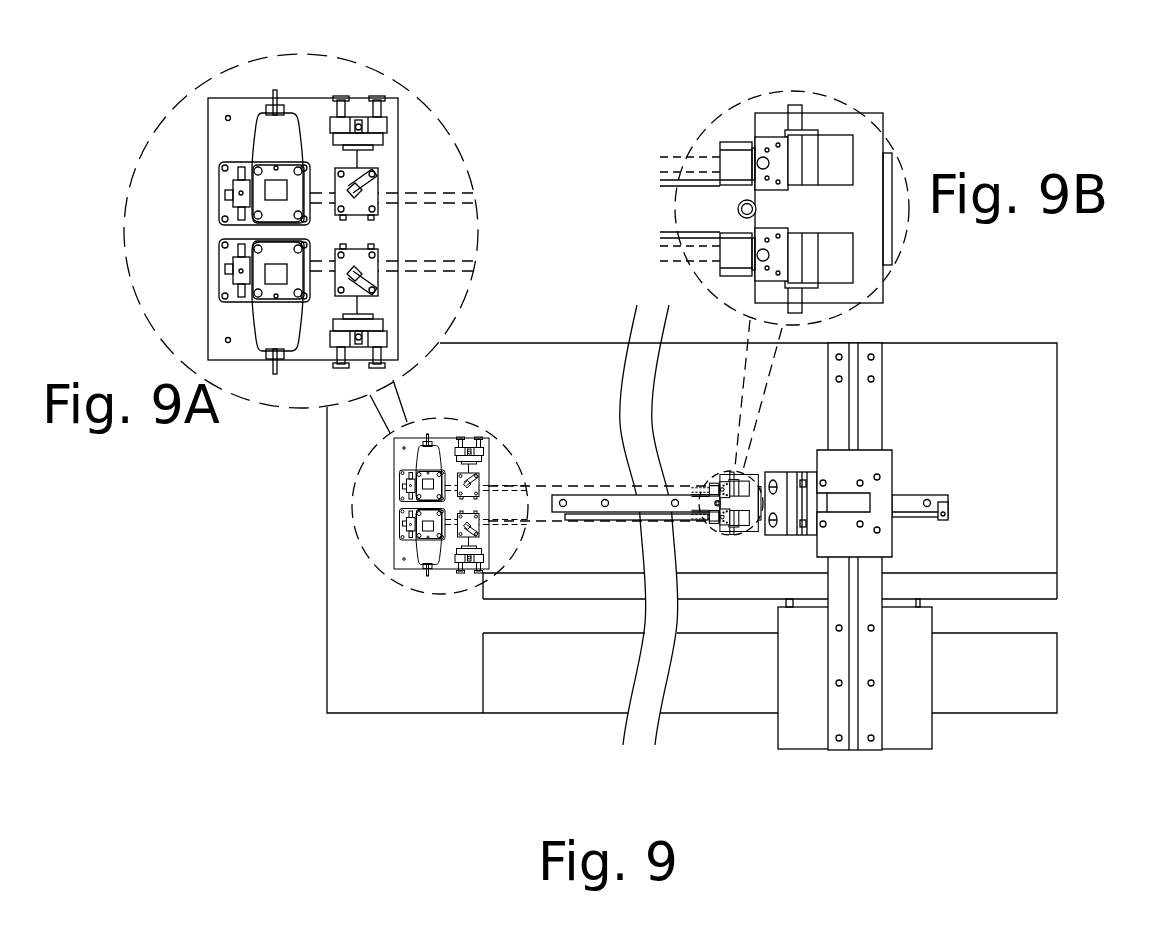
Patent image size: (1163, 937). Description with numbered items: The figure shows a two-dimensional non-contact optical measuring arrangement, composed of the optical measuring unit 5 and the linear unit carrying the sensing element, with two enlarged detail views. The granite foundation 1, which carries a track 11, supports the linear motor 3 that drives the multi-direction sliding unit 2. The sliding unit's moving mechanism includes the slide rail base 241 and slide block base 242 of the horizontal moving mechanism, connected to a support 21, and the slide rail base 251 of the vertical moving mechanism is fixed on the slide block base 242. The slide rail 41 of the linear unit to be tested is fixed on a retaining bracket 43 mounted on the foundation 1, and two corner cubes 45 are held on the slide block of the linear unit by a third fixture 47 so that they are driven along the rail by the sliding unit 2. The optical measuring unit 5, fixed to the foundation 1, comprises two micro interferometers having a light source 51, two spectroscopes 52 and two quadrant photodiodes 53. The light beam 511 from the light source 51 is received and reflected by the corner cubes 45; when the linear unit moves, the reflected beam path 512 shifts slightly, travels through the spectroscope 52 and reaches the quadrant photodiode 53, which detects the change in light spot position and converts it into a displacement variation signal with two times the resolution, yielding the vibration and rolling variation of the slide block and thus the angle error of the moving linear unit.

In FIG. 9, the foundation 1 is at (345, 640).
In FIG. 9, the multi-direction sliding unit 2 is at (862, 768).
In FIG. 9, the linear motor 3 is at (1045, 583).
In FIG. 9A, the optical measuring unit 5 is at (128, 125).
In FIG. 9, the track 11 is at (1045, 668).
In FIG. 9, the support 21 is at (920, 740).
In FIG. 9, the slide rail 41 is at (935, 500).
In FIG. 9, the retaining bracket 43 is at (943, 512).
In FIG. 9B, the corner cube 45 is at (733, 165).
In FIG. 9B, the third fixture 47 is at (812, 160).
In FIG. 9A, the light source 51 is at (266, 145).
In FIG. 9A, the spectroscope 52 is at (378, 180).
In FIG. 9A, the quadrant photodiode 53 is at (365, 140).
In FIG. 9, the slide rail base 241 is at (870, 392).
In FIG. 9, the slide block base 242 is at (878, 468).
In FIG. 9, the slide rail base 251 is at (812, 485).
In FIG. 9A, the light beam 511 is at (453, 203).
In FIG. 9A, the beam path 512 is at (453, 192).